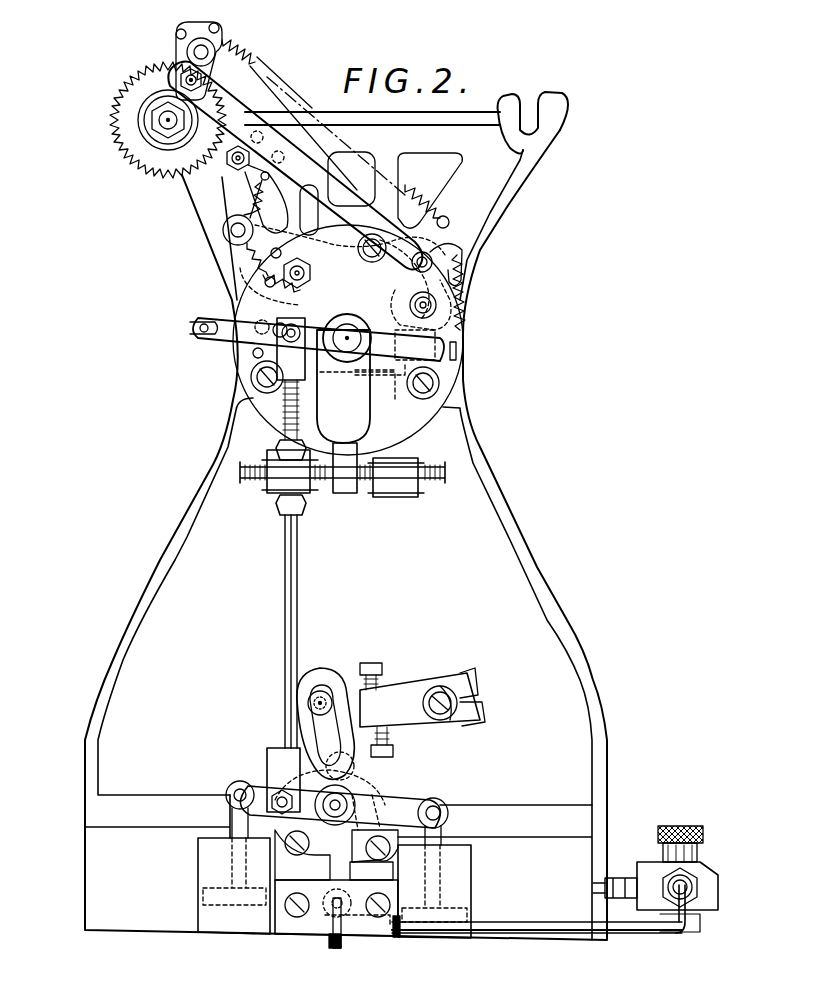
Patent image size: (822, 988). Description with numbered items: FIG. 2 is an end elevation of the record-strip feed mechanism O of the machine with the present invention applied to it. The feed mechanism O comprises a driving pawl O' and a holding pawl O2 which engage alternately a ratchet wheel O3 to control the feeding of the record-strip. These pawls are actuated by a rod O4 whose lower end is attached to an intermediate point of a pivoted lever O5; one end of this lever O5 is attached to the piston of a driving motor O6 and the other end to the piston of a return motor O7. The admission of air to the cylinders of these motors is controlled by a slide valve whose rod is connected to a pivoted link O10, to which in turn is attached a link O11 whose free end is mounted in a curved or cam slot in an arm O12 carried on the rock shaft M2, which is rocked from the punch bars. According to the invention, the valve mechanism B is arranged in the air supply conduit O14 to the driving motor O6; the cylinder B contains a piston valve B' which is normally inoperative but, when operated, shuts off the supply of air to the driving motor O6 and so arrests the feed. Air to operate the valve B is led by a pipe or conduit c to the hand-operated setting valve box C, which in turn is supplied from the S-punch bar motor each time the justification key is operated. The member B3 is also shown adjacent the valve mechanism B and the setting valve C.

The feed mechanism O is at (370, 340).
The driving pawl O' is at (316, 321).
The holding pawl O2 is at (299, 289).
The ratchet wheel O3 is at (365, 404).
The rod O4 is at (298, 572).
The link O11 is at (312, 726).
The arm O12 is at (400, 700).
The rock shaft M2 is at (450, 722).
The pivoted link O10 is at (372, 790).
The pivoted lever O5 is at (415, 806).
The return motor O7 is at (225, 905).
The valve mechanism B is at (335, 930).
The piston valve B' is at (345, 938).
The air supply conduit O14 is at (341, 940).
The driving motor O6 is at (441, 908).
The rod B3 is at (636, 932).
The setting valve C is at (712, 868).
The pipe or conduit c is at (618, 878).